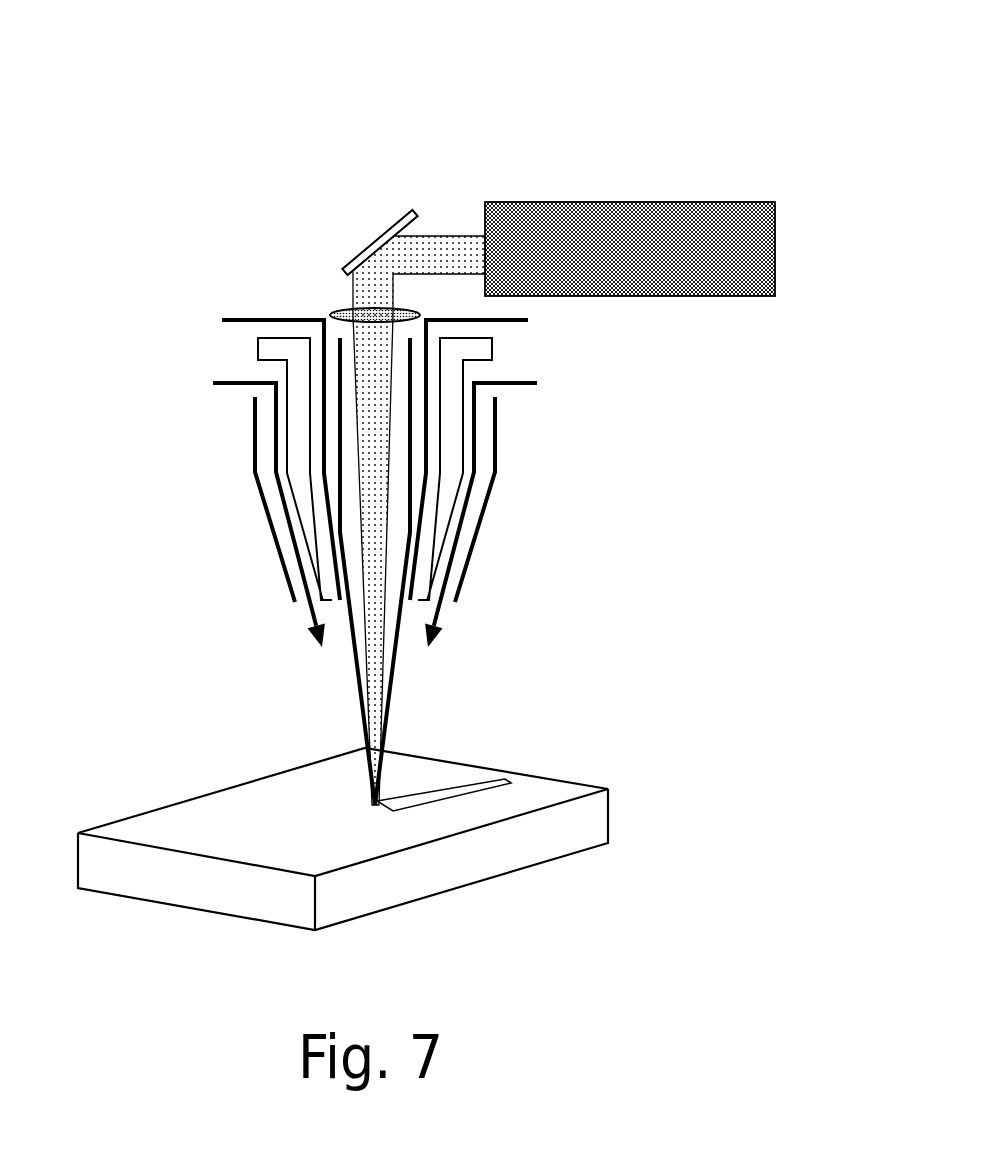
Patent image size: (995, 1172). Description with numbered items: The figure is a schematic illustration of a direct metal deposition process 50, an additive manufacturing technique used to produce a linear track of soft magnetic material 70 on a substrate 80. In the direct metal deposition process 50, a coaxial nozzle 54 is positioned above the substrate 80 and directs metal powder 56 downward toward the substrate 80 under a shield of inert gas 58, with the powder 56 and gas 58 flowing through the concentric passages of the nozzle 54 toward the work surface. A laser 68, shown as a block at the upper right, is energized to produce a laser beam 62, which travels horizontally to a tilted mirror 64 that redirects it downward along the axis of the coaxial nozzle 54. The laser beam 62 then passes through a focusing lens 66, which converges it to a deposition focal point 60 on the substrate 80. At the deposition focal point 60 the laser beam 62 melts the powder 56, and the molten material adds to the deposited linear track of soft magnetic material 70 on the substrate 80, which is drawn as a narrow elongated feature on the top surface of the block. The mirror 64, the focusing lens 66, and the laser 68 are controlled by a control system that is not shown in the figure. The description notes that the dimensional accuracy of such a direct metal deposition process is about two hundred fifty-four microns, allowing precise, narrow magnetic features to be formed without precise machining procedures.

The direct metal deposition process 50 is at (409, 470).
The coaxial nozzle 54 is at (309, 555).
The metal powder 56 is at (375, 453).
The inert gas 58 is at (378, 508).
The deposition focal point 60 is at (347, 788).
The laser beam 62 is at (375, 675).
The mirror 64 is at (377, 238).
The focusing lens 66 is at (333, 310).
The laser 68 is at (692, 201).
The linear track of soft magnetic material 70 is at (487, 780).
The substrate 80 is at (608, 808).